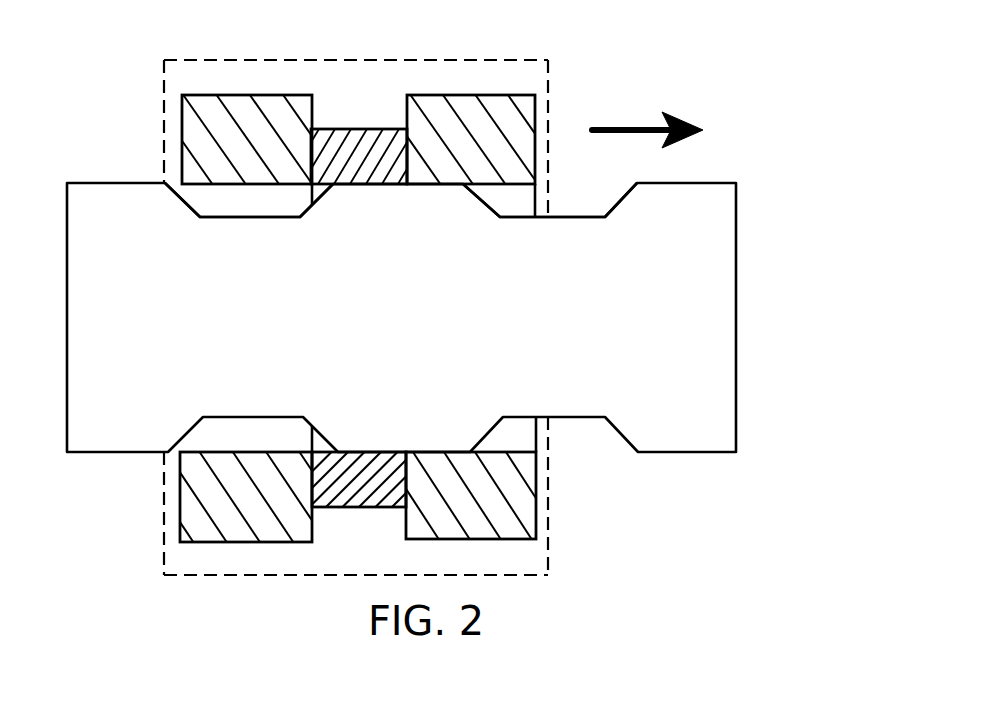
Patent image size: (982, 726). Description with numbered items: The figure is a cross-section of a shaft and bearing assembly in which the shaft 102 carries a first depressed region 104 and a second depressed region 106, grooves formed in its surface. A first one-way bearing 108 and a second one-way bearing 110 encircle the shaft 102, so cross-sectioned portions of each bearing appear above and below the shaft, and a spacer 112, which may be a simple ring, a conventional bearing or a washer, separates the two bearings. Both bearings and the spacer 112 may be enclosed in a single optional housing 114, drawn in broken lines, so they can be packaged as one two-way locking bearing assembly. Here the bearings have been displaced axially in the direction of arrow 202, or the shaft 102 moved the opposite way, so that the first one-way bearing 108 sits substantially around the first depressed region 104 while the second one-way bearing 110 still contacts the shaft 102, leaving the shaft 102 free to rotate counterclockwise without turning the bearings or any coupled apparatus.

The shaft 102 is at (435, 334).
The first depressed region 104 is at (228, 218).
The second depressed region 106 is at (582, 218).
The first one-way bearing 108 is at (262, 152).
The second one-way bearing 110 is at (488, 152).
The spacer 112 is at (379, 168).
The housing 114 is at (162, 122).
The arrow 202 is at (641, 127).